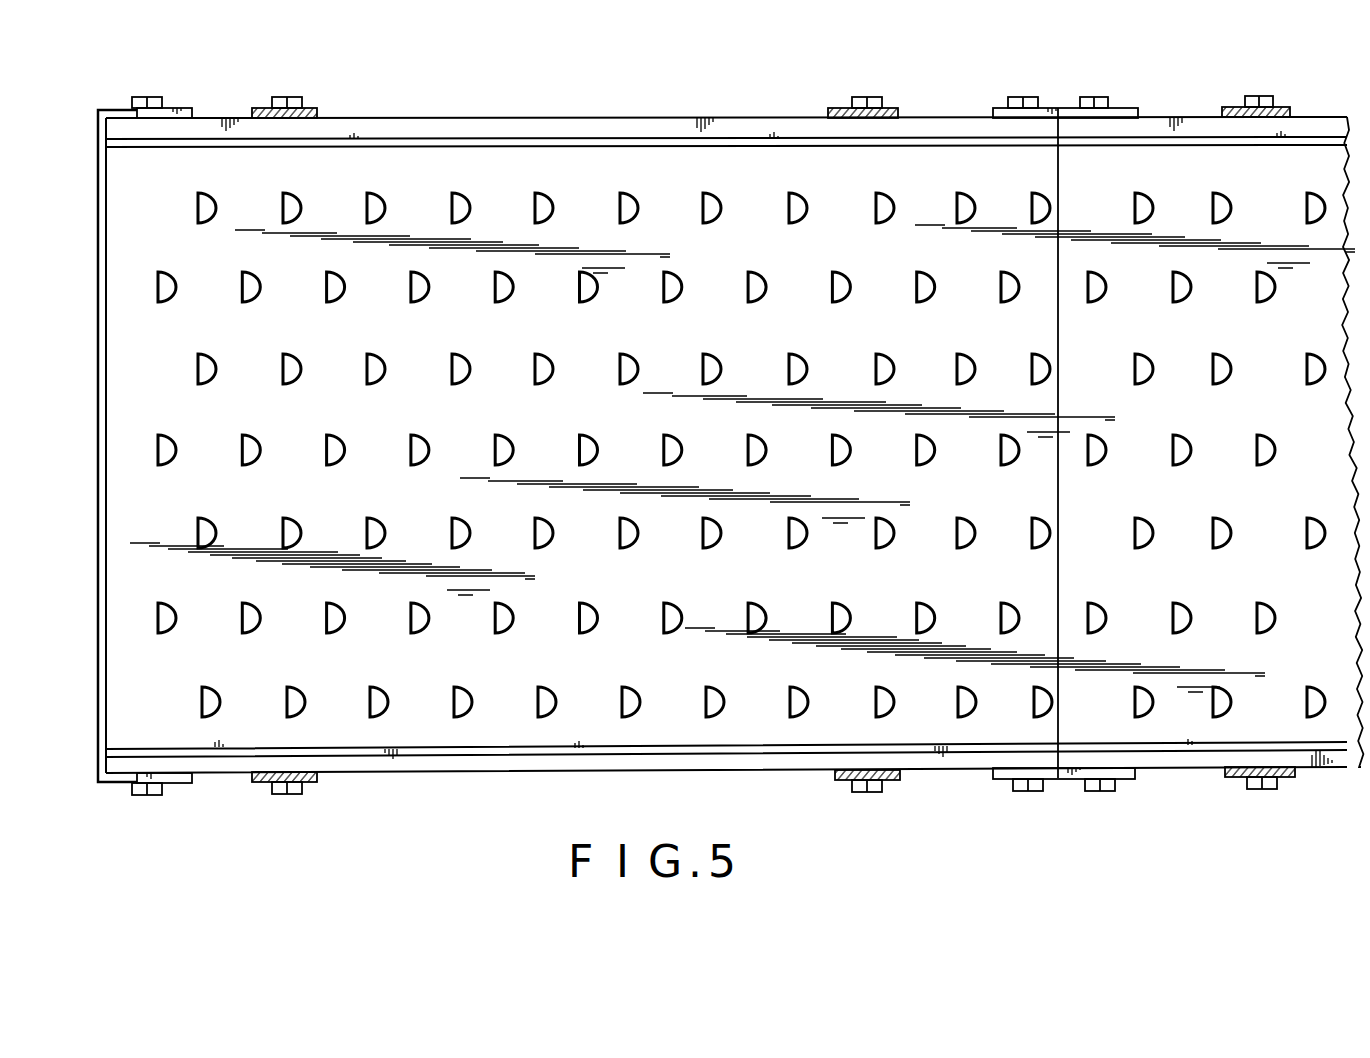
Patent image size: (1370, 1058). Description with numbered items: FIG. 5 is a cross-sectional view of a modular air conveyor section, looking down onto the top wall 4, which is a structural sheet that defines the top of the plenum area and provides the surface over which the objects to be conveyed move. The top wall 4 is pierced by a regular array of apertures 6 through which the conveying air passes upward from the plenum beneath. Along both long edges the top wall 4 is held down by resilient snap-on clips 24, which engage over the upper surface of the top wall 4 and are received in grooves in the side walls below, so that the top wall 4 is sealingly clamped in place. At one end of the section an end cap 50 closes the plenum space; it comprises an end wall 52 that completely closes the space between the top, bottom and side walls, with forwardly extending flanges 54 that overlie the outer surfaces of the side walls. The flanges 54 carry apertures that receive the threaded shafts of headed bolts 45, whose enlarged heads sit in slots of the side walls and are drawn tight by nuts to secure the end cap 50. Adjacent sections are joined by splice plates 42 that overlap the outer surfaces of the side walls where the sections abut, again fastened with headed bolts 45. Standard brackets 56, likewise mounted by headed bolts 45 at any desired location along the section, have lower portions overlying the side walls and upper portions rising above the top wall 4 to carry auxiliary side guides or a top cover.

The top wall 4 is at (856, 355).
The apertures 6 is at (672, 281).
The snap-on clips 24 is at (597, 127).
The splice plates 42 is at (1053, 108).
The headed bolts 45 is at (149, 97).
The end caps 50 is at (107, 437).
The end wall 52 is at (107, 207).
The flanges 54 is at (180, 113).
The brackets 56 is at (312, 113).